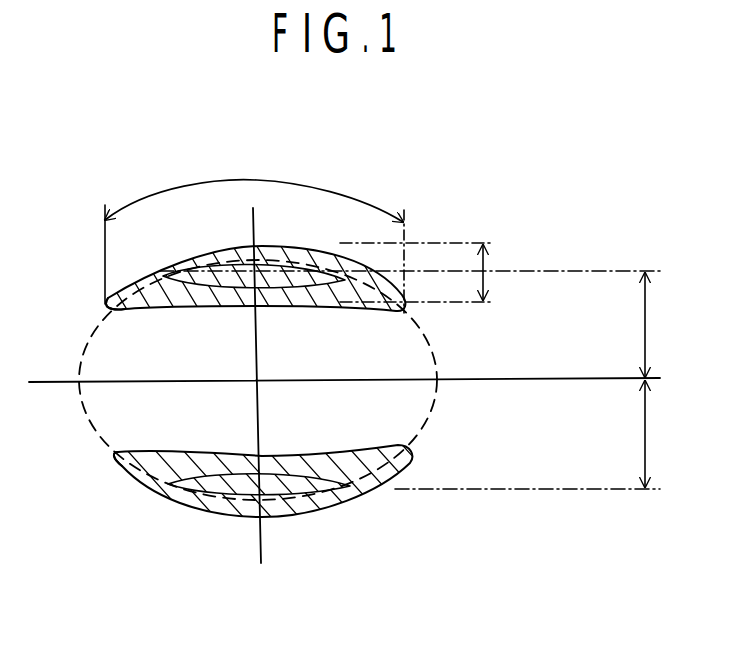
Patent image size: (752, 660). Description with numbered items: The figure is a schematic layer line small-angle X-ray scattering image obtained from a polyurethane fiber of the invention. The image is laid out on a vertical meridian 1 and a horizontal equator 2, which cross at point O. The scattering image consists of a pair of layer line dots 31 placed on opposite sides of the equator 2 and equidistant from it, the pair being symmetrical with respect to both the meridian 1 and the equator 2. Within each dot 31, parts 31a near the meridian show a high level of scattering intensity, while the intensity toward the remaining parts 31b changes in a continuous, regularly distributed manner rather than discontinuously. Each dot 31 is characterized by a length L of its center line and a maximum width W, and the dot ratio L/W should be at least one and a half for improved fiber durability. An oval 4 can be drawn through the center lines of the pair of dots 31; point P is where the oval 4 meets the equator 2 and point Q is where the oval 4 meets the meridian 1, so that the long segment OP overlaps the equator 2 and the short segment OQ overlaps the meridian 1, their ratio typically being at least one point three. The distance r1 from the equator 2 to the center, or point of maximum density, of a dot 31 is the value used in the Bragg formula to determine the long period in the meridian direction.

The meridian line 1 is at (264, 546).
The equatorial line 2 is at (498, 386).
The oval 4 is at (86, 427).
The layer line dots 31 is at (174, 311).
The high scattering intensity parts 31a is at (293, 308).
The lower intensity parts of the dot 31b is at (150, 283).
The length of the center line of the dots L is at (256, 180).
The maximum width of the dots W is at (484, 262).
The distance from equator to dot center r1 is at (421, 380).
The point O is at (257, 380).
The point P is at (437, 379).
The point Q is at (287, 514).